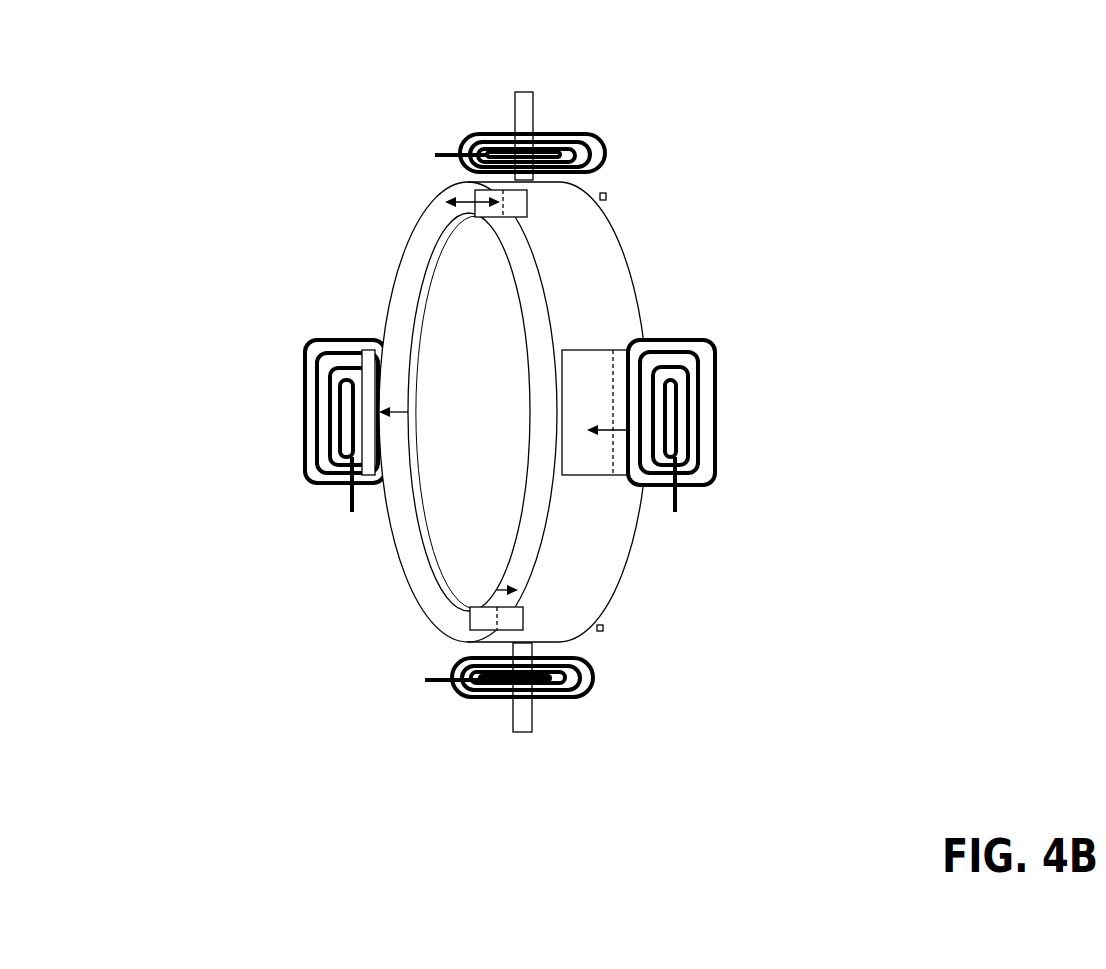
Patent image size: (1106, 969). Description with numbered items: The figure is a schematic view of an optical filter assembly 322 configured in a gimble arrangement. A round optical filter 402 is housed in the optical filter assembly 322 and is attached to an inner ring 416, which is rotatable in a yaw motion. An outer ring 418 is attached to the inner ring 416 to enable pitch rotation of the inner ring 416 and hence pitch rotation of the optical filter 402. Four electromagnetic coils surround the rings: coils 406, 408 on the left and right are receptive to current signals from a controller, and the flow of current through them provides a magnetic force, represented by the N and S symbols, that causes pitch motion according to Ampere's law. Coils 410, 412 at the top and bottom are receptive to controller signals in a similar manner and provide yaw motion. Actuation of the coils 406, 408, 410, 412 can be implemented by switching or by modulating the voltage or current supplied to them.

The optical filter assembly 322 is at (766, 124).
The optical filter 402 is at (520, 404).
The coil 406 is at (303, 412).
The coil 408 is at (717, 412).
The coil 410 is at (550, 133).
The coil 412 is at (565, 700).
The inner ring 416 is at (542, 313).
The outer ring 418 is at (620, 305).